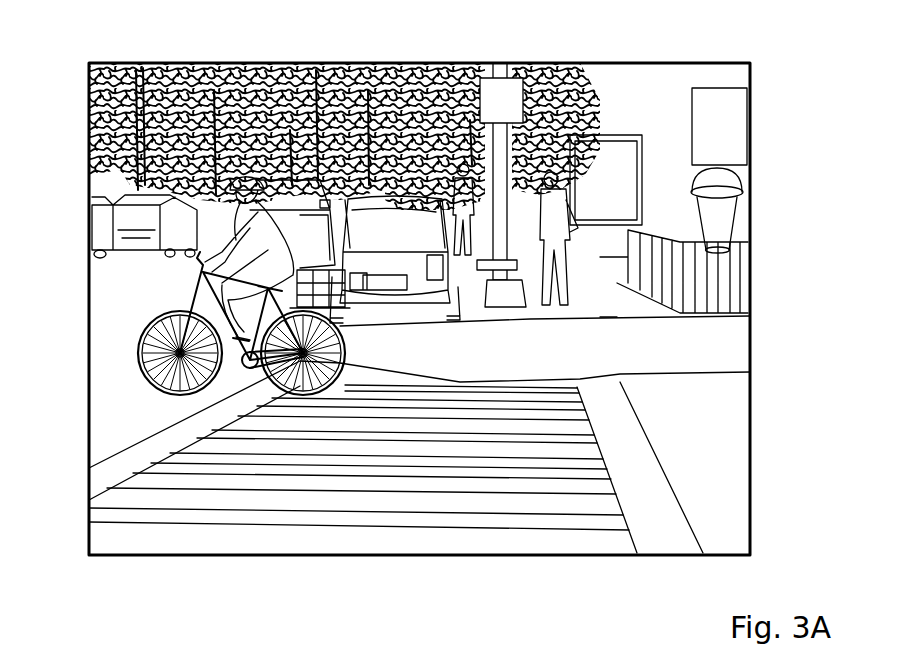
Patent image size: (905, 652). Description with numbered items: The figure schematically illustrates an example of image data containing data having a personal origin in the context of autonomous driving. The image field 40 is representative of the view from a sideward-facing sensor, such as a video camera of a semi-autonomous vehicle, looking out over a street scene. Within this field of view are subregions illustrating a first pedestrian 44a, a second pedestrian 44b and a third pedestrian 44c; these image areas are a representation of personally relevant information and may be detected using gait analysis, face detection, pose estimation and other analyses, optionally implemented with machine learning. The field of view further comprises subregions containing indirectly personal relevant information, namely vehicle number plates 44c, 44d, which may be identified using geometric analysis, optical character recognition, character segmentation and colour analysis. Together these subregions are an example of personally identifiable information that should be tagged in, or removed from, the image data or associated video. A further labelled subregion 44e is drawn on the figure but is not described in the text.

The image field 40 is at (772, 62).
The first pedestrian 44a is at (452, 158).
The second pedestrian 44b is at (552, 172).
The third pedestrian 44c is at (252, 232).
The vehicle number plate 44d is at (388, 300).
The parked vehicle 44e is at (92, 240).